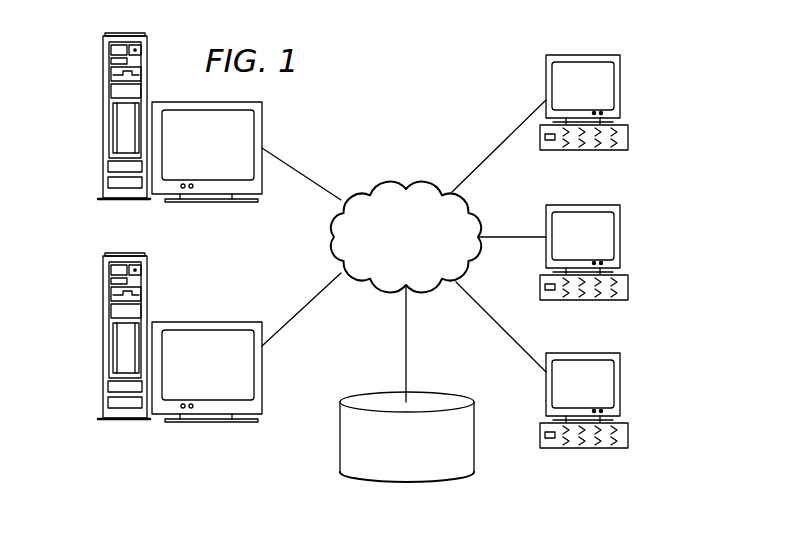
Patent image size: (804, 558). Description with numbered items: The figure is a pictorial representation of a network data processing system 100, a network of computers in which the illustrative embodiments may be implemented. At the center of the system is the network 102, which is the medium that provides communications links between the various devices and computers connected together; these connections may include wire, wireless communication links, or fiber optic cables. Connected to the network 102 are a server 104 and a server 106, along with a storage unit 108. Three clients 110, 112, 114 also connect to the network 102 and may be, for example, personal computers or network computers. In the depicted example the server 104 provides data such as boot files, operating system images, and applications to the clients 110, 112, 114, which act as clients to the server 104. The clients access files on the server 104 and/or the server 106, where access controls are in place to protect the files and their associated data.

The network data processing system 100 is at (462, 64).
The network 102 is at (378, 186).
The server 104 is at (102, 120).
The server 106 is at (102, 338).
The storage unit 108 is at (388, 484).
The client 110 is at (621, 88).
The client 112 is at (628, 288).
The client 114 is at (621, 385).